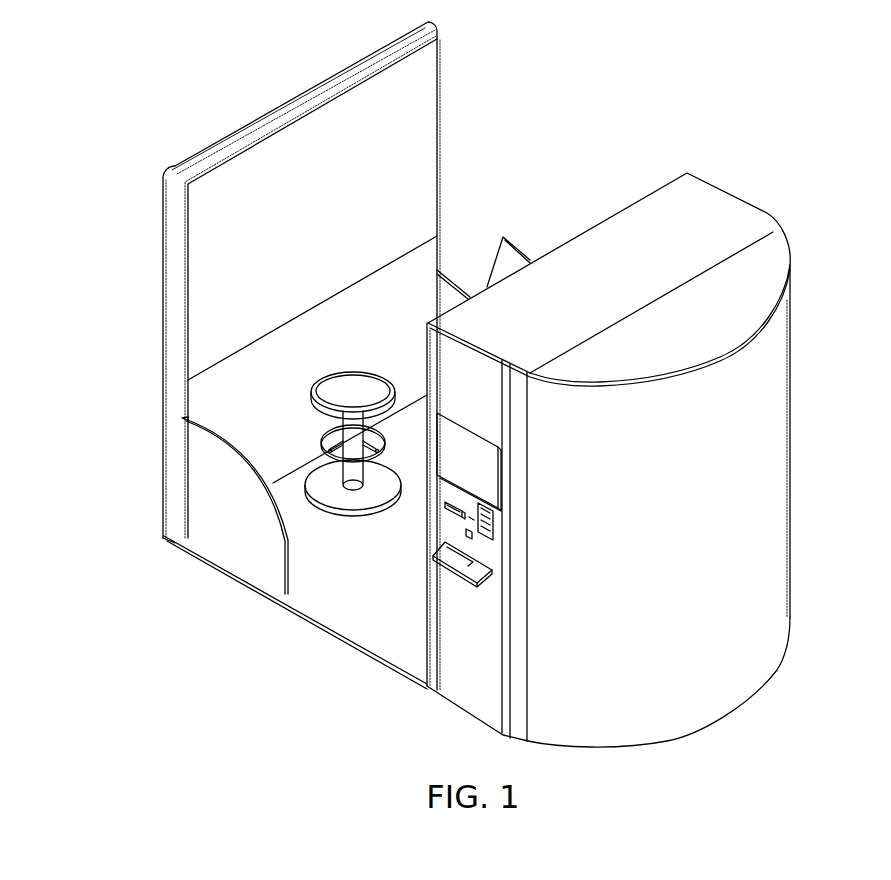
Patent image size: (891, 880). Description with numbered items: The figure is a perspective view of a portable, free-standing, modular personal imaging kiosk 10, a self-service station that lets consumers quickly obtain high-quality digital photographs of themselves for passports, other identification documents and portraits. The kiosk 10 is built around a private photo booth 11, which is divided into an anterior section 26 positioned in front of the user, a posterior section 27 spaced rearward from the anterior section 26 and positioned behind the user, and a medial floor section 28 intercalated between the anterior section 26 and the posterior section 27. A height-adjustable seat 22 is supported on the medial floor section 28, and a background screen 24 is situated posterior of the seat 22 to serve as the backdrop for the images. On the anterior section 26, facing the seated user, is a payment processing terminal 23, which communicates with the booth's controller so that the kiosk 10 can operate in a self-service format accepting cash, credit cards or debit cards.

The personal imaging kiosk 10 is at (632, 410).
The booth 11 is at (281, 356).
The seat 22 is at (355, 377).
The payment processing terminal 23 is at (498, 556).
The background screen 24 is at (322, 356).
The anterior section 26 is at (632, 457).
The posterior section 27 is at (228, 144).
The medial floor section 28 is at (372, 615).